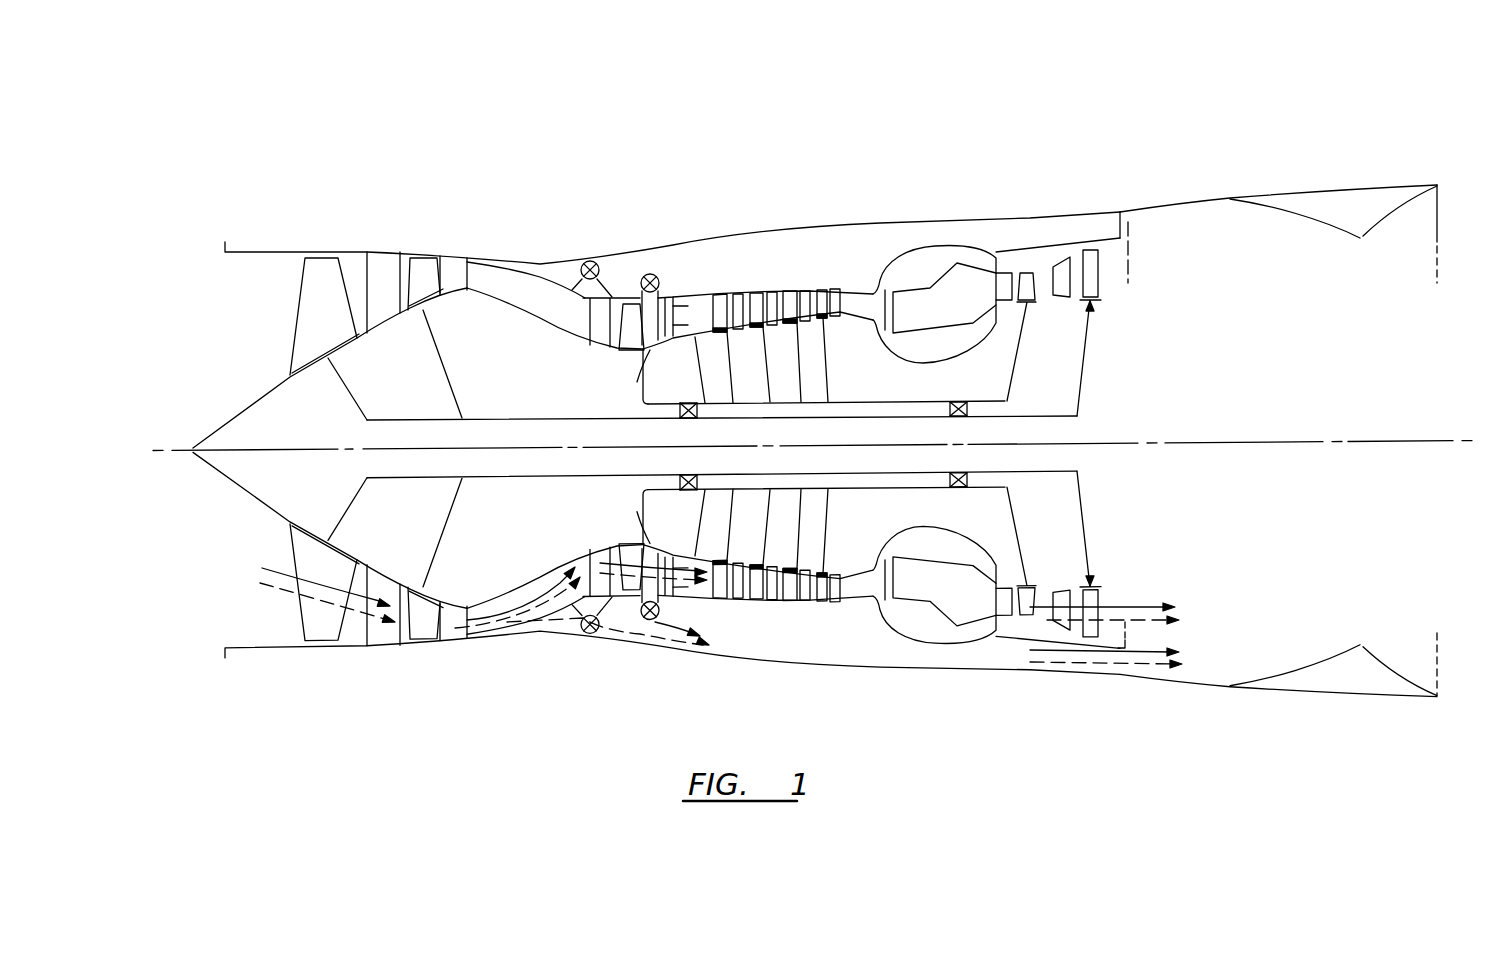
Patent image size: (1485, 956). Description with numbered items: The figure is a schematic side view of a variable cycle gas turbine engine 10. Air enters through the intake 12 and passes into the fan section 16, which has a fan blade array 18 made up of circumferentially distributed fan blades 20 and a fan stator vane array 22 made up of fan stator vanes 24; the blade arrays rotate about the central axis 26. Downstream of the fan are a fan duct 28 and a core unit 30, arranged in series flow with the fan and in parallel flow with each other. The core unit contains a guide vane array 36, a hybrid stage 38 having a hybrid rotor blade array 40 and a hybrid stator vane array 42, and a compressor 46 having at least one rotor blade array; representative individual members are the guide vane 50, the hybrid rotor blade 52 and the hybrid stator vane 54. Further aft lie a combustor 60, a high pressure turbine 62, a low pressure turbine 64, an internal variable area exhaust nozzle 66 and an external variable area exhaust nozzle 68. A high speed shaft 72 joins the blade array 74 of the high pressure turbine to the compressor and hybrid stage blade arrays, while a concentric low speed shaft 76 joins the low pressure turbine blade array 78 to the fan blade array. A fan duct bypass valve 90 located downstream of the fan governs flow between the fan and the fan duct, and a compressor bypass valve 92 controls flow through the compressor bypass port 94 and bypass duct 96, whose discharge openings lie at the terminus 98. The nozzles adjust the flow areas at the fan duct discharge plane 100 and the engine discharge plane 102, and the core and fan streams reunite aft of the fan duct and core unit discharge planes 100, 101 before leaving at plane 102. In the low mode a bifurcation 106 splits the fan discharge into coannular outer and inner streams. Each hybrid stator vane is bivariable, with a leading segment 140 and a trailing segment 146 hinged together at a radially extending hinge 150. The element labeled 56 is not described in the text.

The variable cycle gas turbine engine 10 is at (738, 137).
The intake 12 is at (228, 275).
The fan section 16 is at (403, 168).
The fan blade array 18 is at (320, 242).
The fan blades 20 is at (313, 262).
The fan stator vane array 22 is at (388, 242).
The fan stator vanes 24 is at (378, 262).
The central axis 26 is at (1218, 444).
The fan duct 28 is at (748, 231).
The core unit 30 is at (787, 242).
The guide vane array 36 is at (586, 354).
The hybrid stage 38 is at (653, 260).
The hybrid rotor blade array 40 is at (610, 360).
The hybrid stator vane array 42 is at (690, 340).
The compressor 46 is at (778, 350).
The guide vane 50 is at (597, 323).
The hybrid rotor blade 52 is at (625, 318).
The hybrid stator vane 54 is at (700, 334).
The combustor 56 is at (942, 305).
The combustor 60 is at (917, 593).
The high pressure turbine 62 is at (1023, 630).
The low pressure turbine 64 is at (1087, 640).
The internal variable area exhaust nozzle 66 is at (1122, 207).
The external variable area exhaust nozzle 68 is at (1352, 207).
The high speed shaft 72 is at (913, 401).
The blade array of the high pressure turbine 74 is at (1024, 271).
The low speed shaft 76 is at (487, 474).
The low pressure turbine blade array 78 is at (1101, 285).
The fan duct bypass valve 90 is at (592, 258).
The compressor bypass valve 92 is at (650, 272).
The compressor bypass port 94 is at (638, 381).
The bypass duct 96 is at (667, 292).
The terminus of the bypass duct 98 is at (660, 611).
The fan duct discharge plane 100 is at (1130, 228).
The core unit discharge plane 101 is at (1130, 266).
The engine discharge plane 102 is at (1437, 242).
The bifurcation 106 is at (573, 289).
The leading segment 140 is at (668, 340).
The trailing segment 146 is at (745, 290).
The hinge 150 is at (675, 296).